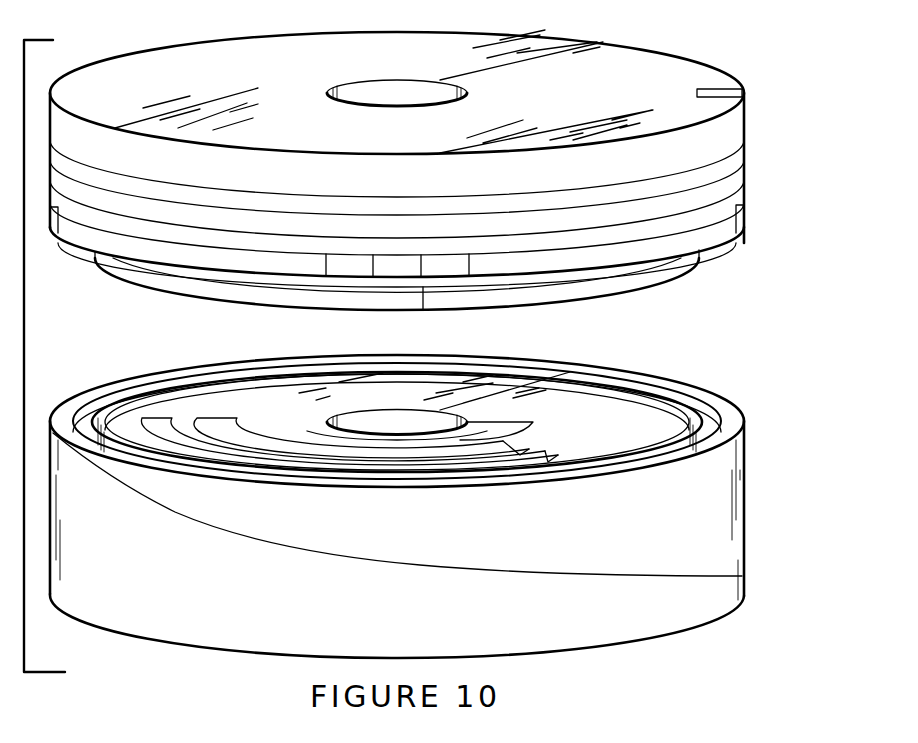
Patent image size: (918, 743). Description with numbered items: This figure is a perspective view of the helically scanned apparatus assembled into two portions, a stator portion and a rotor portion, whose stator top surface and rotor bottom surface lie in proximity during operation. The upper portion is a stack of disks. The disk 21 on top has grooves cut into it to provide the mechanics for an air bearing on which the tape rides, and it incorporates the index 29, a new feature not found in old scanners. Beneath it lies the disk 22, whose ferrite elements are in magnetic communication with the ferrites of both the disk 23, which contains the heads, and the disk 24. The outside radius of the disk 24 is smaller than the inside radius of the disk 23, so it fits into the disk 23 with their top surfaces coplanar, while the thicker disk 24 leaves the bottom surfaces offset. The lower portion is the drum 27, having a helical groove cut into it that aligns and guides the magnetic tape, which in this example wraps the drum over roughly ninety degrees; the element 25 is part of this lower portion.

The disk 21 is at (746, 165).
The disk 22 is at (746, 207).
The disk 23 is at (746, 236).
The disk 24 is at (668, 285).
The tray insert 25 is at (645, 393).
The drum 27 is at (746, 520).
The index 29 is at (746, 95).